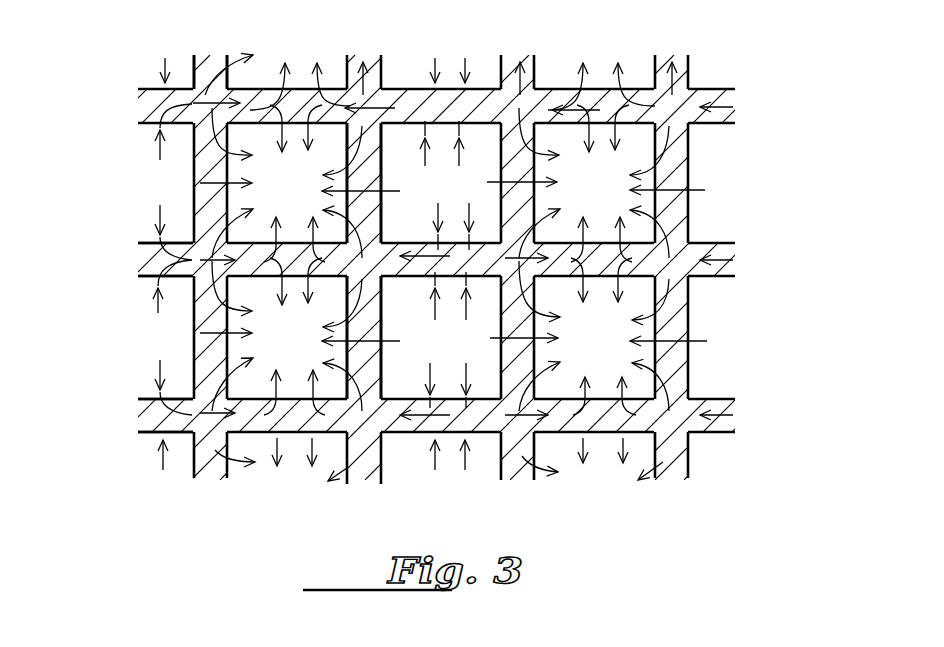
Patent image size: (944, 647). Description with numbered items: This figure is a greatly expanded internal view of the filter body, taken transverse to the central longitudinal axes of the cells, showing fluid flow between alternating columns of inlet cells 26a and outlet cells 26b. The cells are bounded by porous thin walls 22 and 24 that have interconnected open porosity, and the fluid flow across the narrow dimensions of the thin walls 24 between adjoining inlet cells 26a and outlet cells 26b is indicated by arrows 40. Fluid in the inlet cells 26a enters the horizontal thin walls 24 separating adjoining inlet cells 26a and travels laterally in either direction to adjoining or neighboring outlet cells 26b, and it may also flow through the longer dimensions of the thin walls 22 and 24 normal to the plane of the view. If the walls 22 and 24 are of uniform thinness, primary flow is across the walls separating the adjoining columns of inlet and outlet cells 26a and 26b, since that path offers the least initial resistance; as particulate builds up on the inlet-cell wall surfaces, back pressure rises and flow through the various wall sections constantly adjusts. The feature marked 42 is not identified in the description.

The thin walls 22 is at (735, 117).
The thin walls 24 is at (209, 63).
The inlet cells 26a is at (200, 183).
The outlet cells 26b is at (304, 199).
The arrows 40 is at (382, 190).
The open cell ends 42 is at (142, 407).